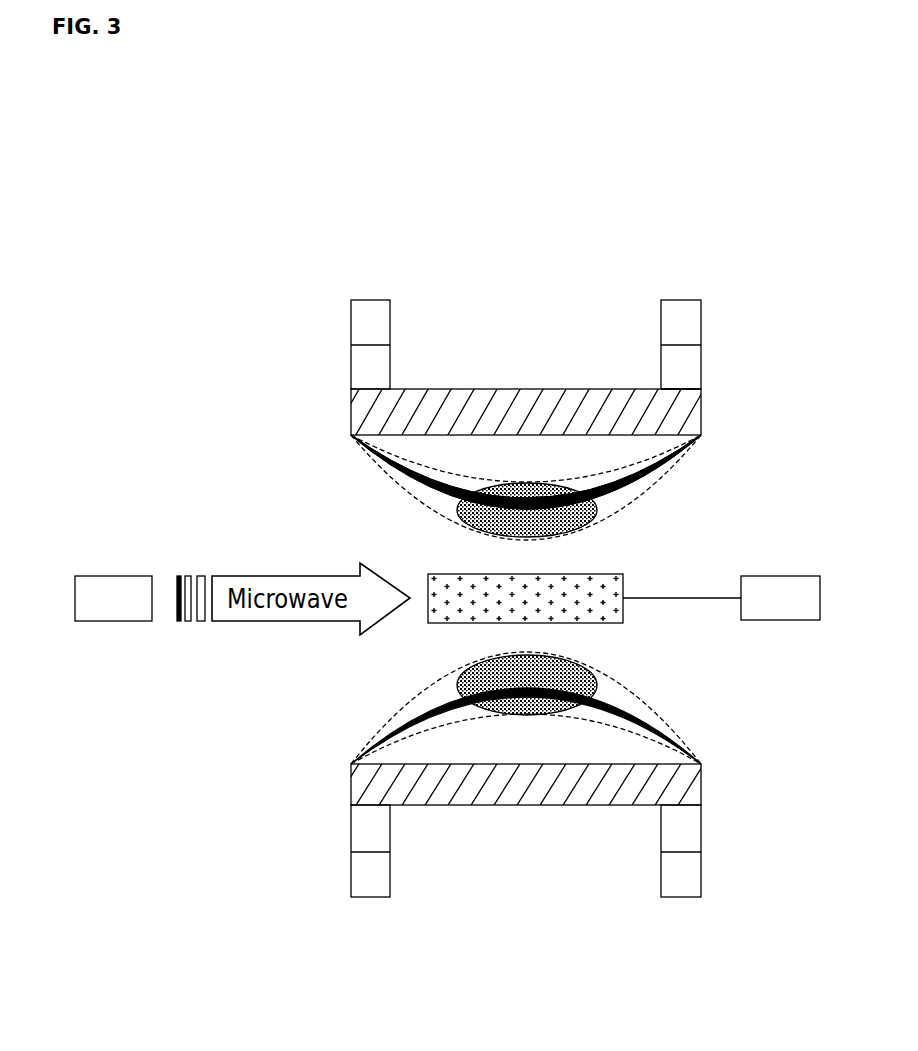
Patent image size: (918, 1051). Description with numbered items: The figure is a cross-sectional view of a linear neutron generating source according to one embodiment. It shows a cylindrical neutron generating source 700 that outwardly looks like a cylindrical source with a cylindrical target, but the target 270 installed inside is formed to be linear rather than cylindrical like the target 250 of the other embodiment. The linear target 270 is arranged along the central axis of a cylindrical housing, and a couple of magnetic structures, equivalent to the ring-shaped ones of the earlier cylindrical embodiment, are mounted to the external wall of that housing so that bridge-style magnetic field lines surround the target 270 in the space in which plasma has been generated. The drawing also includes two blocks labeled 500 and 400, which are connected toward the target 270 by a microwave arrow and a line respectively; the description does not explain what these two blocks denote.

The cylindrical neutron generating source 700 is at (268, 146).
The target 250 is at (683, 389).
The linear target 270 is at (623, 590).
The controller 400 is at (780, 598).
The microwave generator 500 is at (113, 598).